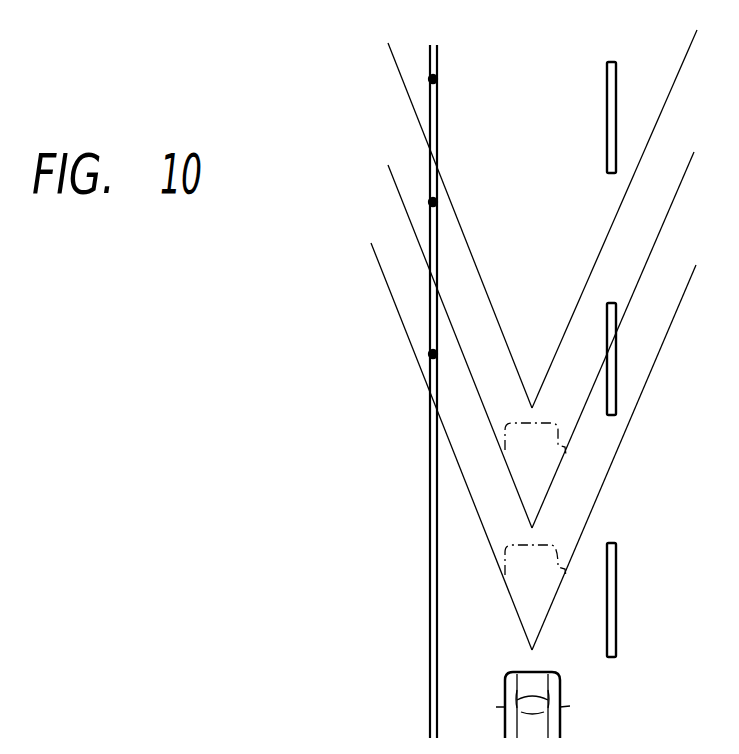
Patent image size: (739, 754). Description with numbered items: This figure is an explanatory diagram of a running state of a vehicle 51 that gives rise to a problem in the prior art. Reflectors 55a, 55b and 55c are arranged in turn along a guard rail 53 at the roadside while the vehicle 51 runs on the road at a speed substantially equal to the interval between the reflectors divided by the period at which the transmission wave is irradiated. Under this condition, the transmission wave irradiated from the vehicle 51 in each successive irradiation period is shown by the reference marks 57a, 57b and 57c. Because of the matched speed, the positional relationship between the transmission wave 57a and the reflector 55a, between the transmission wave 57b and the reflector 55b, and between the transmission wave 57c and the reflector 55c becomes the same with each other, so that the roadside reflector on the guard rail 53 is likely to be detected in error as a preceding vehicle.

The vehicle 51 is at (566, 455).
The guard rail 53 is at (429, 562).
The reflector 55a is at (433, 354).
The reflector 55b is at (433, 202).
The reflector 55c is at (433, 79).
The transmission wave 57a is at (396, 308).
The transmission wave 57b is at (412, 229).
The transmission wave 57c is at (414, 115).